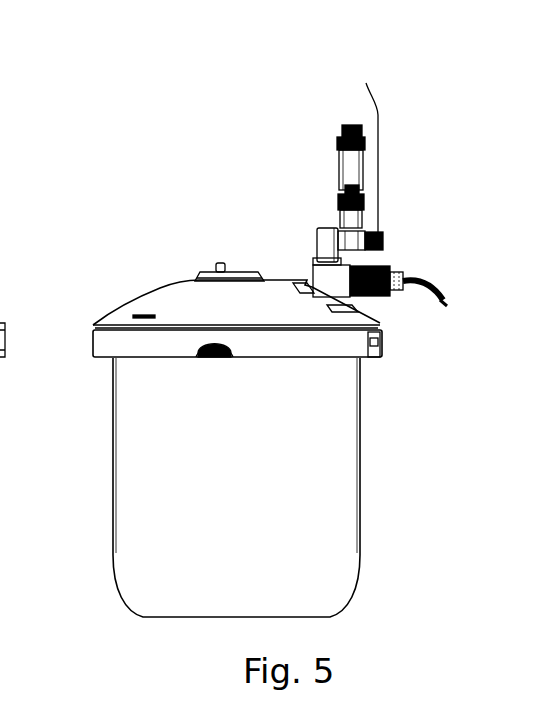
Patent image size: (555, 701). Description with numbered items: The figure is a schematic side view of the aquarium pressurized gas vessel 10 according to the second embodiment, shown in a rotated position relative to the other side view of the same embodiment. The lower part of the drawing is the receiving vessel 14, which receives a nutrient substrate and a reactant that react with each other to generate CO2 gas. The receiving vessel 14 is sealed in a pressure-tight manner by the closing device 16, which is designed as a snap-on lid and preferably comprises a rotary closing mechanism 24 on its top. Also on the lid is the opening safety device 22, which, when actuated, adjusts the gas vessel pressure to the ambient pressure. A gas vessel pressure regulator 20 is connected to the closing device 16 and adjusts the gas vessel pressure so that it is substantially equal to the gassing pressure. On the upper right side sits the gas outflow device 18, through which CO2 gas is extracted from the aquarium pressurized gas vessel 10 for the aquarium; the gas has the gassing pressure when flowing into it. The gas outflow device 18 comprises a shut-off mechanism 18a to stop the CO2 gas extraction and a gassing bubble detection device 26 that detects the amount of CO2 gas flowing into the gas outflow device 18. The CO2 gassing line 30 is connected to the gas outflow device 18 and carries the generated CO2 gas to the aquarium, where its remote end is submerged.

The aquarium pressurized gas vessel 10 is at (120, 157).
The receiving vessel 14 is at (282, 473).
The closing device 16 is at (190, 292).
The gas outflow device 18 is at (326, 238).
The shut-off mechanism 18a is at (369, 149).
The gas vessel pressure regulator 20 is at (133, 316).
The opening safety device 22 is at (218, 263).
The rotary closing mechanism 24 is at (247, 272).
The gassing bubble detection device 26 is at (345, 163).
The CO2 gassing line 30 is at (432, 298).